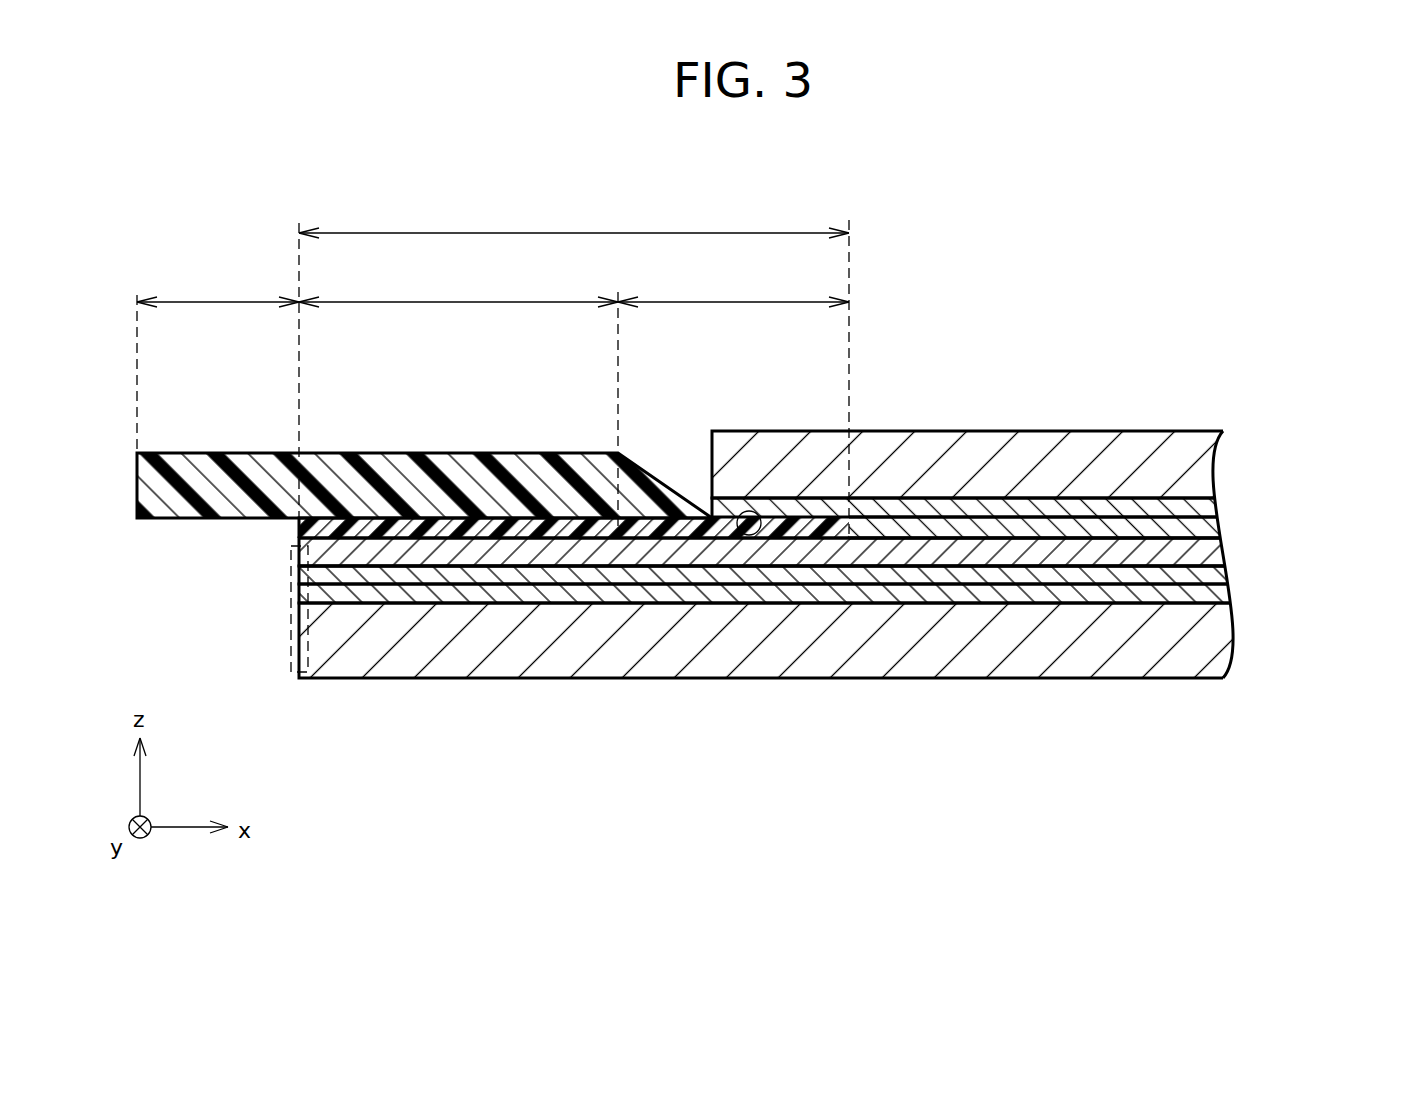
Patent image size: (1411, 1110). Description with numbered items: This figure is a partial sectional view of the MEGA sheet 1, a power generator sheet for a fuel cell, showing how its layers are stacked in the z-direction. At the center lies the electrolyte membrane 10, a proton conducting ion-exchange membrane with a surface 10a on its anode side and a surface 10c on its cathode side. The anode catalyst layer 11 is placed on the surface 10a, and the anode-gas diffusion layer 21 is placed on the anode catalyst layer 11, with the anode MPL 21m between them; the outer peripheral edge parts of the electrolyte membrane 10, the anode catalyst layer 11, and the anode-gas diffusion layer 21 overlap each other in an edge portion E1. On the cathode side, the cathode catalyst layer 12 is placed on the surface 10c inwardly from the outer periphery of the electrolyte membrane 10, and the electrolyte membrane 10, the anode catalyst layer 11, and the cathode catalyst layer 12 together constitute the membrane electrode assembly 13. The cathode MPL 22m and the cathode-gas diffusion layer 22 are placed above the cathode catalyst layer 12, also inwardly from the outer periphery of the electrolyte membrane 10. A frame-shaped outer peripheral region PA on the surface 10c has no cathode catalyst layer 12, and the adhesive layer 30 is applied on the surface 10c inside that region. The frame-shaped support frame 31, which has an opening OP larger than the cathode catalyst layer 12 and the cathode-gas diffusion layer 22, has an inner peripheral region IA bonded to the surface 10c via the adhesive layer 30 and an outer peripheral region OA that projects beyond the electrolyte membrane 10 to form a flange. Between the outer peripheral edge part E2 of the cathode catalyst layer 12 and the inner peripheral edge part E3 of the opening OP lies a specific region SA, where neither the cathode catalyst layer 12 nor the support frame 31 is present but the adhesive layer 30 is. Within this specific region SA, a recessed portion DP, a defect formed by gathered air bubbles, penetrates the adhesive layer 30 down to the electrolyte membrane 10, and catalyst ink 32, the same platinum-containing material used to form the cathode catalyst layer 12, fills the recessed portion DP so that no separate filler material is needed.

The MEGA sheet 1 is at (1279, 218).
The electrolyte membrane 10 is at (1195, 555).
The surface on an anode side 10a is at (1097, 567).
The surface on a cathode side 10c is at (1105, 538).
The anode catalyst layer 11 is at (1200, 578).
The cathode catalyst layer 12 is at (1187, 530).
The membrane electrode assembly 13 is at (848, 552).
The anode-gas diffusion layer 21 is at (1130, 662).
The anode MPL 21m is at (1183, 598).
The cathode-gas diffusion layer 22 is at (1138, 447).
The cathode MPL 22m is at (1183, 510).
The adhesive layer 30 is at (312, 528).
The support frame 31 is at (152, 483).
The catalyst ink 32 is at (743, 522).
The outer peripheral region OA is at (218, 361).
The inner peripheral region IA is at (458, 371).
The specific region SA is at (733, 288).
The outer peripheral region PA is at (574, 219).
The edge portion E1 is at (293, 602).
The outer peripheral edge part E2 is at (851, 365).
The inner peripheral edge part E3 is at (619, 397).
The opening OP is at (618, 492).
The recessed portion DP is at (750, 511).